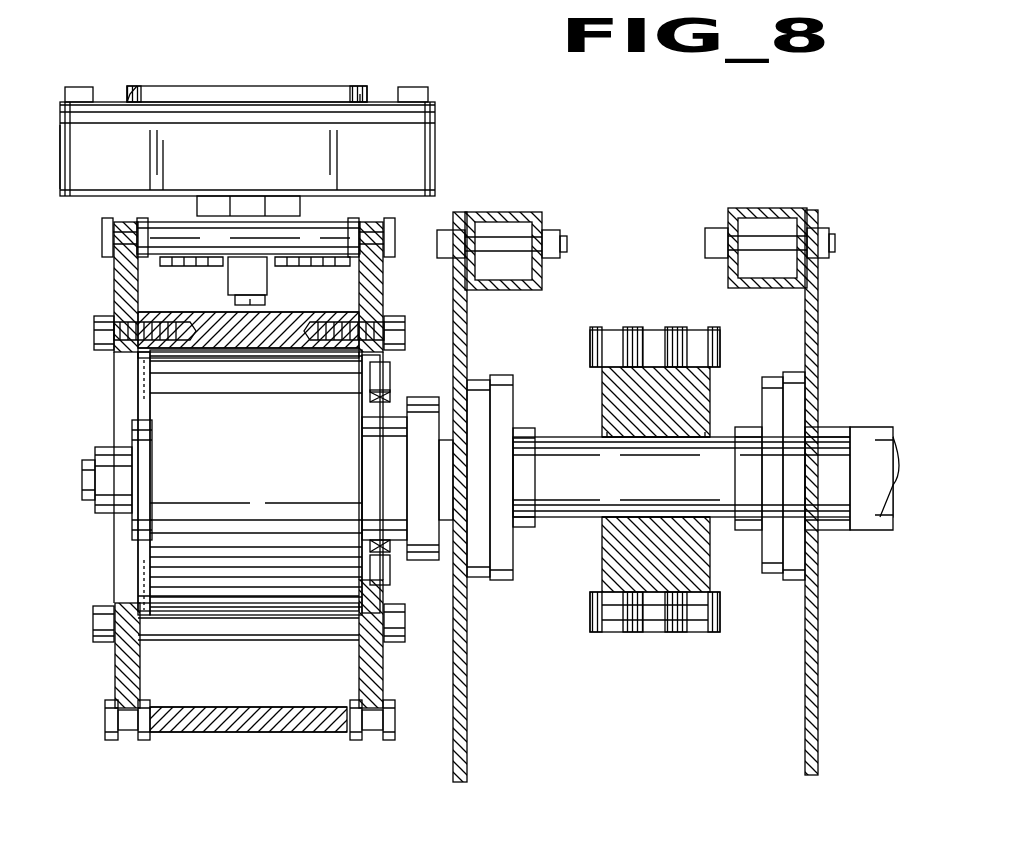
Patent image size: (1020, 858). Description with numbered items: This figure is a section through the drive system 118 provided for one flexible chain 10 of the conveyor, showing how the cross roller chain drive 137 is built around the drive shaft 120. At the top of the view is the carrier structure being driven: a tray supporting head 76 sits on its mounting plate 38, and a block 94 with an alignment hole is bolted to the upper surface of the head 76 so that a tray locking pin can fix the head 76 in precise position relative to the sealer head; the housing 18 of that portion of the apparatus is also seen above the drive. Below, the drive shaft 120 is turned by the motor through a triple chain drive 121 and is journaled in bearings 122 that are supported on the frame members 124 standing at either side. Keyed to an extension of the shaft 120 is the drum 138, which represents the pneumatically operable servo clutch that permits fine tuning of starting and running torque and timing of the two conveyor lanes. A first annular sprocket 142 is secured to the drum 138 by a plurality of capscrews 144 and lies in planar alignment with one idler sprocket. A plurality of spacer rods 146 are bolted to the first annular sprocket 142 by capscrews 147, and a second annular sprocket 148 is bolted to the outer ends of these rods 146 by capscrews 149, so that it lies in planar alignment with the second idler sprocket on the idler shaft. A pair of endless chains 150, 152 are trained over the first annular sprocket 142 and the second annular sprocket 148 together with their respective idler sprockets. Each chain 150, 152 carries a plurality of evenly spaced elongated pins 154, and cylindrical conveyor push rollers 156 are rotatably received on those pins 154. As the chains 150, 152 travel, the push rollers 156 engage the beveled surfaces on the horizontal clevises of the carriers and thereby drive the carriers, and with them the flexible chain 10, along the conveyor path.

The flexible chain 10 is at (512, 145).
The housing 18 is at (442, 124).
The mounting plate 38 is at (103, 180).
The tray supporting head 76 is at (383, 100).
The block 94 is at (80, 87).
The drive system 118 is at (680, 208).
The drive shaft 120 is at (605, 505).
The triple chain drive 121 is at (678, 328).
The bearing 122 is at (778, 448).
The frame member 124 is at (805, 706).
The cross roller chain drive 137 is at (240, 742).
The drum 138 is at (228, 478).
The first annular sprocket 142 is at (383, 300).
The capscrew 144 is at (363, 533).
The spacer rod 146 is at (292, 312).
The capscrew 147 is at (405, 333).
The second annular sprocket 148 is at (114, 283).
The capscrew 149 is at (105, 352).
The endless chain 150 is at (405, 212).
The endless chain 152 is at (102, 238).
The elongated pin 154 is at (165, 710).
The conveyor push roller 156 is at (247, 222).